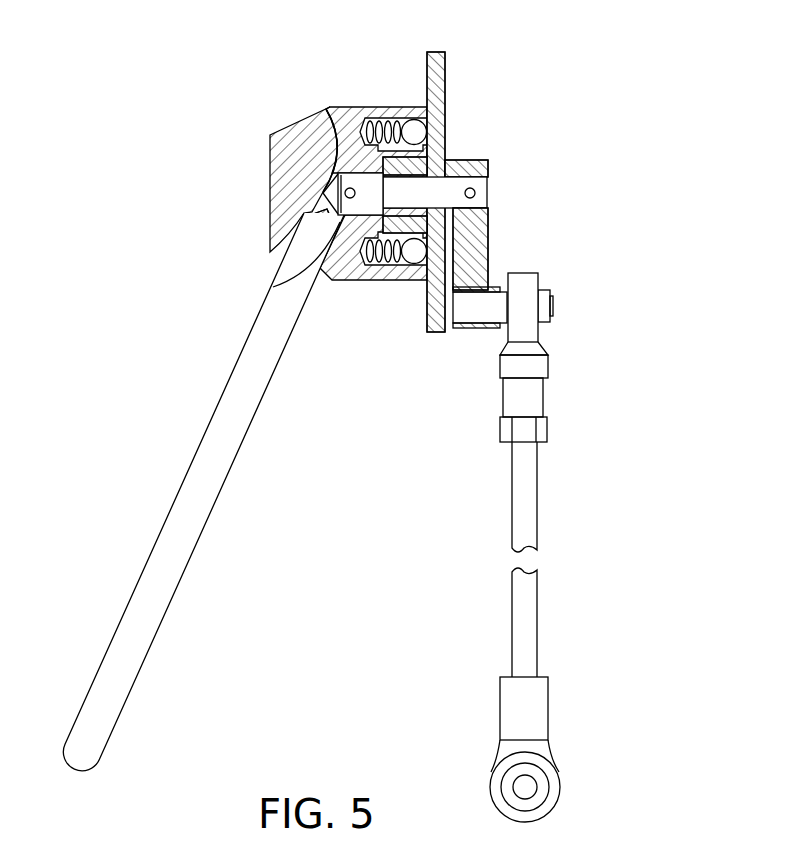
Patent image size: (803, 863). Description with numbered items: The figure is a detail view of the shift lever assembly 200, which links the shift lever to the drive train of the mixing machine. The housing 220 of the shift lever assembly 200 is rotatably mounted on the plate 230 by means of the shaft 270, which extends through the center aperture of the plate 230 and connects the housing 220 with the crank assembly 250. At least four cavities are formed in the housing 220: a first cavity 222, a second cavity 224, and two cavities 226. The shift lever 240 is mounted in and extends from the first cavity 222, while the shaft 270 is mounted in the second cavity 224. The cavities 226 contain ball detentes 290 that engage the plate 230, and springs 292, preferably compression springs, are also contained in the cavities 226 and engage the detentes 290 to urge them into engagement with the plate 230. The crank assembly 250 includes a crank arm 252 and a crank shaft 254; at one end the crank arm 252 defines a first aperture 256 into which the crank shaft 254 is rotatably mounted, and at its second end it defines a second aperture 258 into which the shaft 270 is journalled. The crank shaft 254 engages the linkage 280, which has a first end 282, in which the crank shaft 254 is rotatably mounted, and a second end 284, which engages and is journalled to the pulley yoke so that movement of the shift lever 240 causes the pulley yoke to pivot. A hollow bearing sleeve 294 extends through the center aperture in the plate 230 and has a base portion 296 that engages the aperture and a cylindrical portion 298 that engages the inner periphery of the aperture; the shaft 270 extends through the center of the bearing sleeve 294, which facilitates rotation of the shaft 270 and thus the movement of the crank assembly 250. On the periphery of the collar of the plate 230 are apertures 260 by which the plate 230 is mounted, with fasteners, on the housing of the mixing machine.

The shift lever assembly 200 is at (230, 178).
The housing 220 is at (326, 109).
The first cavity 222 is at (302, 222).
The second cavity 224 is at (334, 142).
The cavities 226 is at (388, 120).
The plate 230 is at (446, 108).
The shift lever 240 is at (137, 632).
The crank assembly 250 is at (572, 281).
The crank arm 252 is at (470, 266).
The crank shaft 254 is at (552, 307).
The first aperture 256 is at (493, 328).
The second aperture 258 is at (488, 169).
The apertures 260 is at (440, 80).
The shaft 270 is at (486, 201).
The linkage 280 is at (560, 517).
The first end 282 is at (537, 365).
The second end 284 is at (543, 710).
The ball detentes 290 is at (413, 119).
The springs 292 is at (363, 125).
The bearing sleeve 294 is at (450, 145).
The base portion 296 is at (432, 170).
The cylindrical portion 298 is at (273, 287).